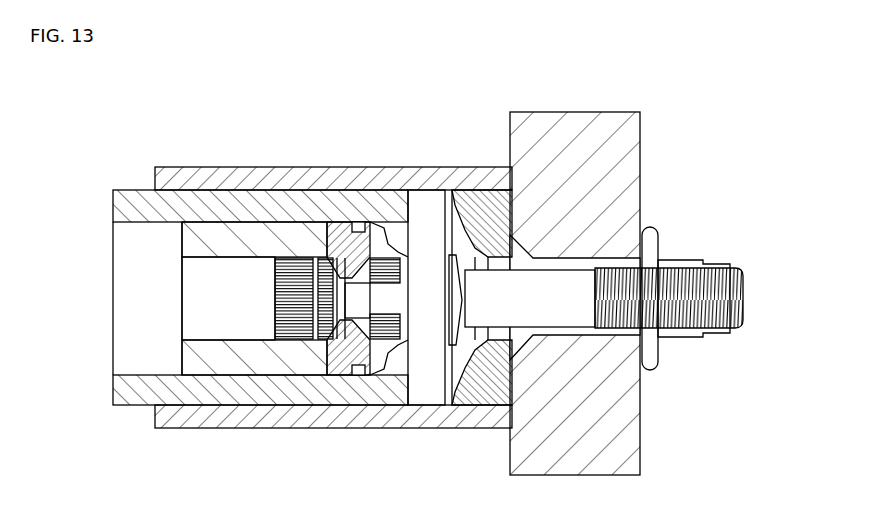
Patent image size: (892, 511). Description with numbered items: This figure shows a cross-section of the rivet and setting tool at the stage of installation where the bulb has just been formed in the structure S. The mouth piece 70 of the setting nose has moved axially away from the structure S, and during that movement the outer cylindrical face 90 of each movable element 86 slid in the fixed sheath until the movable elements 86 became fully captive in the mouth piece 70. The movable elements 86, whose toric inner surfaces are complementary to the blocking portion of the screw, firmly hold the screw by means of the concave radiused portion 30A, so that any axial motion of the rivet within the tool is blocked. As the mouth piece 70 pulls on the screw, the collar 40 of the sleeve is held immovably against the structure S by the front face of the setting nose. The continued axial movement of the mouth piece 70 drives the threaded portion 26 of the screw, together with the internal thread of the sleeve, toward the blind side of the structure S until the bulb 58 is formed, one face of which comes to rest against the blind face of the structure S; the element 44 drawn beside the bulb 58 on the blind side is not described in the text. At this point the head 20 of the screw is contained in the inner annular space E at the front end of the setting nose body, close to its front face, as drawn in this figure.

The mouth piece 70 is at (250, 243).
The movable element 86 is at (352, 245).
The outer cylindrical face 90 is at (343, 372).
The concave radiused portion 30A is at (348, 283).
The inner annular space E is at (428, 200).
The head 20 is at (457, 278).
The collar 40 is at (527, 250).
The threaded portion 26 is at (742, 292).
The bulb 58 is at (658, 237).
The nut 44 is at (723, 260).
The structure S is at (575, 293).